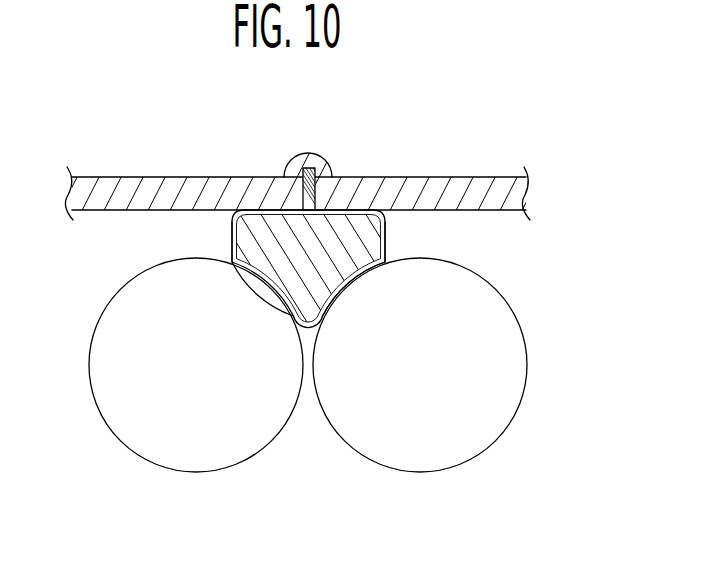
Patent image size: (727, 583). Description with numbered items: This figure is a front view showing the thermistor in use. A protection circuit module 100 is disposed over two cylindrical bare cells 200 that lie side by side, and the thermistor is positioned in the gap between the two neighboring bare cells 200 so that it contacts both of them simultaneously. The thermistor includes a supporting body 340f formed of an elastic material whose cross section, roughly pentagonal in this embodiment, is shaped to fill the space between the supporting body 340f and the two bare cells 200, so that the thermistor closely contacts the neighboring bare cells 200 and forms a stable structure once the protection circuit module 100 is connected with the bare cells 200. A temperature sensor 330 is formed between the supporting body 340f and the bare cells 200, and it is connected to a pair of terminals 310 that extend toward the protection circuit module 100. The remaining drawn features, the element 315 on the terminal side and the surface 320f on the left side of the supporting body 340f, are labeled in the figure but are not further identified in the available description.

The protection circuit module 100 is at (447, 200).
The bare cell 200 is at (515, 365).
The terminal 310 is at (300, 193).
The pin 315 is at (310, 168).
The left side surface of wedge 320f is at (232, 240).
The temperature sensor 330 is at (352, 287).
The supporting body 340f is at (370, 238).